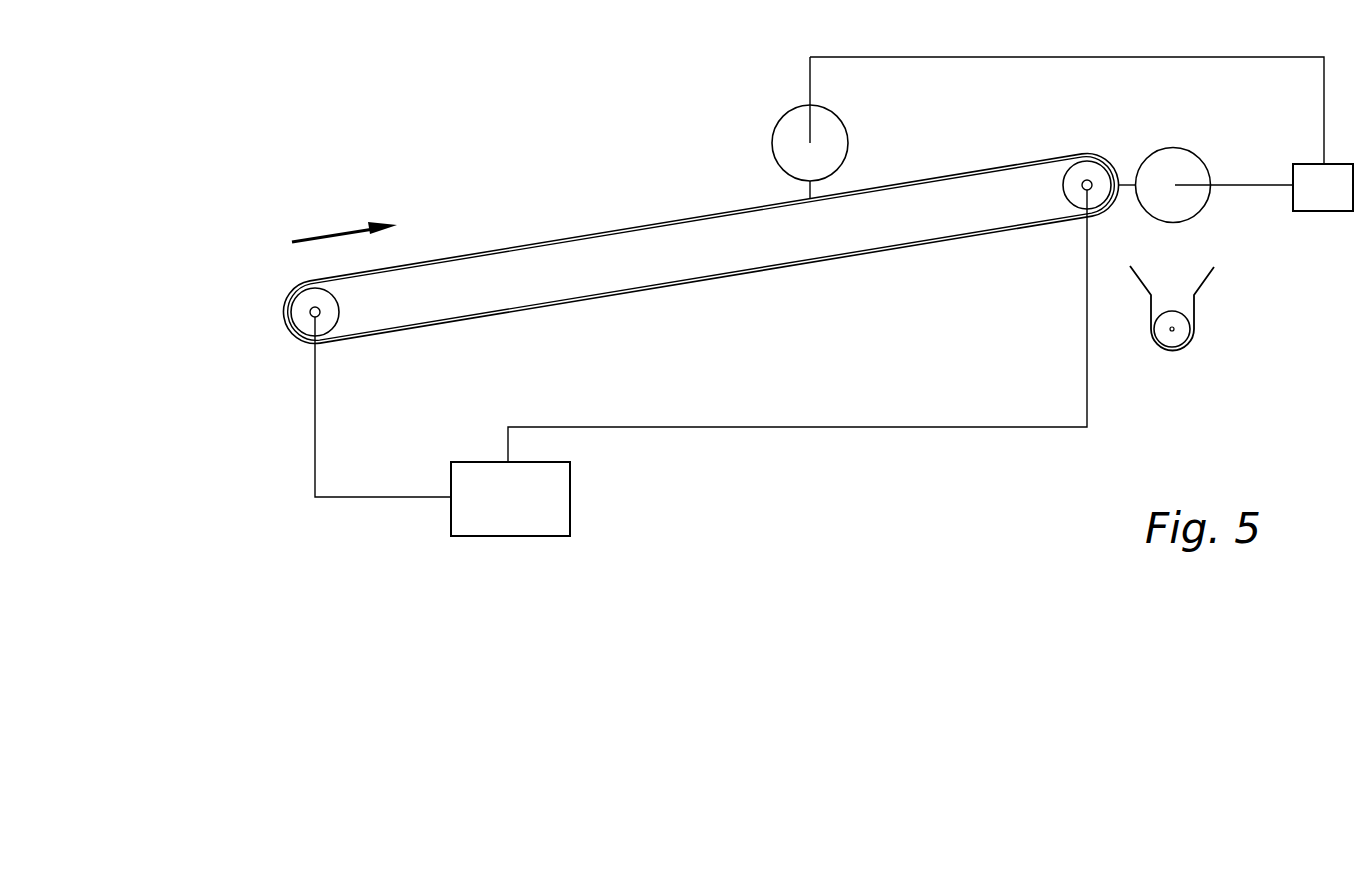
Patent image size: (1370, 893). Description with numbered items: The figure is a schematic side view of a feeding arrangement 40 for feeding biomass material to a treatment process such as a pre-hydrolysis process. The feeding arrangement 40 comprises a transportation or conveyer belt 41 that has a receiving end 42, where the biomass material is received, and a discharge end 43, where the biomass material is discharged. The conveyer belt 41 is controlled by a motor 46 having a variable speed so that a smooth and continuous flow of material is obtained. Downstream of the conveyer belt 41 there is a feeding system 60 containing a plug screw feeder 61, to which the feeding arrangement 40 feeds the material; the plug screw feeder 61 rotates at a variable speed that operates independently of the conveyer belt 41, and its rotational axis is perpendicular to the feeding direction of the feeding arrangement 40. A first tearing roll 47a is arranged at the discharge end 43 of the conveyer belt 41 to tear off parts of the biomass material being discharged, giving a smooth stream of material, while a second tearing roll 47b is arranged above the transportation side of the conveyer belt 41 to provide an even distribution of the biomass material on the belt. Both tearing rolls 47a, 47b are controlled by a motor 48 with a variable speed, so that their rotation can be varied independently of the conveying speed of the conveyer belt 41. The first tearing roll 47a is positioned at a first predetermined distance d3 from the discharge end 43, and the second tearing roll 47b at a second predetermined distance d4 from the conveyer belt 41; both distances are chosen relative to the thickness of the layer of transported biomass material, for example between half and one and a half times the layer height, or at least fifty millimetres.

The feeding arrangement 40 is at (292, 266).
The conveyer belt 41 is at (438, 258).
The receiving end 42 is at (255, 282).
The discharge end 43 is at (1094, 122).
The motor 46 is at (573, 496).
The first tearing roll 47a is at (1198, 157).
The second tearing roll 47b is at (782, 113).
The motor 48 is at (1305, 164).
The feeding system 60 is at (1255, 249).
The plug screw feeder 61 is at (1196, 308).
The first predetermined distance d3 is at (1123, 178).
The second predetermined distance d4 is at (798, 190).